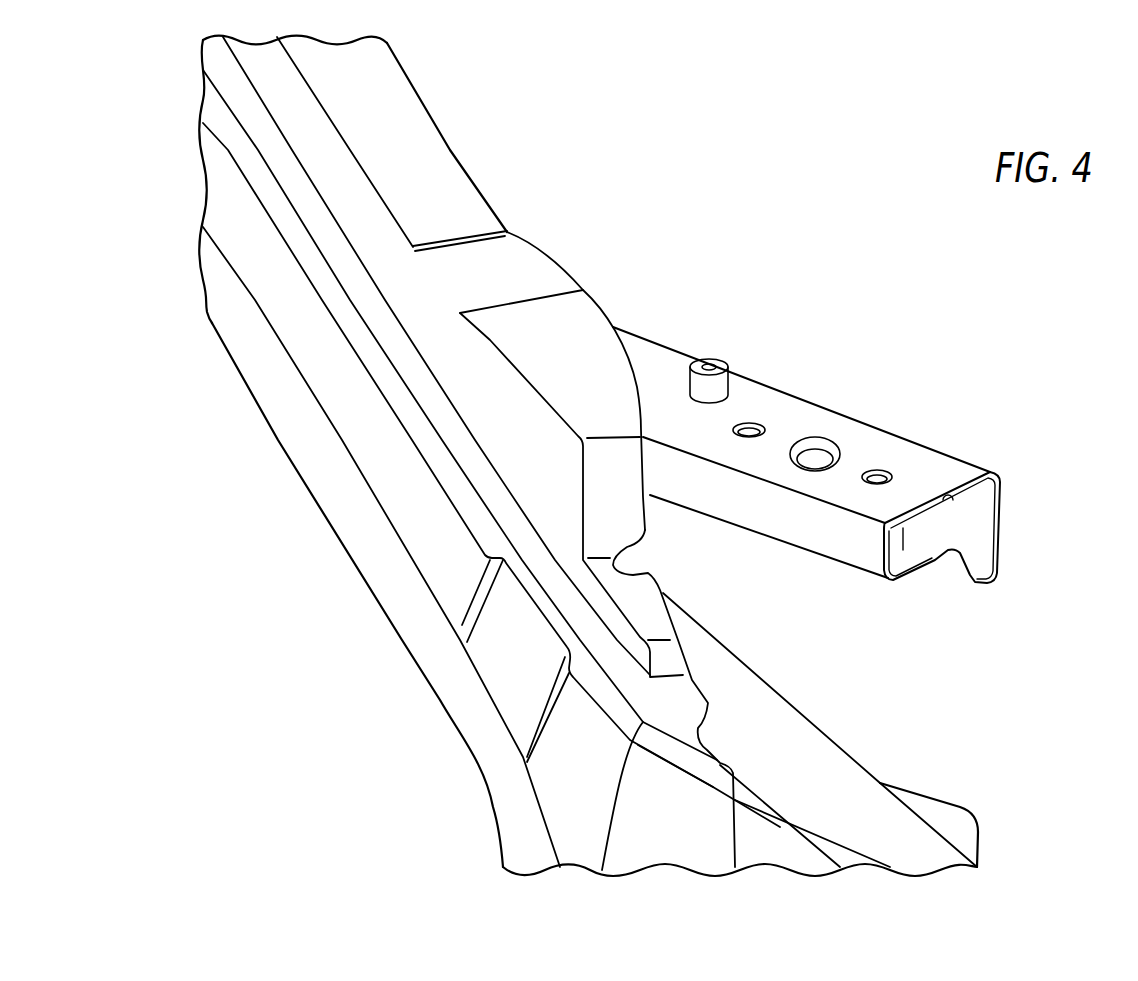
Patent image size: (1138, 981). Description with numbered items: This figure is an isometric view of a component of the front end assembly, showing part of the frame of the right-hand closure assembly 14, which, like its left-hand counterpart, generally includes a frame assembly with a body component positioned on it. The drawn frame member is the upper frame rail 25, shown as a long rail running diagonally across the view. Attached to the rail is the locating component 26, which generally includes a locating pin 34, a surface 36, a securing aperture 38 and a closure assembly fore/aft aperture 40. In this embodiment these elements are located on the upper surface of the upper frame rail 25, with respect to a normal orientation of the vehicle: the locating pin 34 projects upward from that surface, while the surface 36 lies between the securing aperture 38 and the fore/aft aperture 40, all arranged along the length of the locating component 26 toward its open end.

The right-hand closure assembly 14 is at (283, 537).
The upper frame rail 25 is at (873, 408).
The locating component 26 is at (1032, 448).
The locating pin 34 is at (718, 358).
The surface 36 is at (850, 433).
The securing aperture 38 is at (753, 420).
The closure assembly fore/aft aperture 40 is at (882, 467).